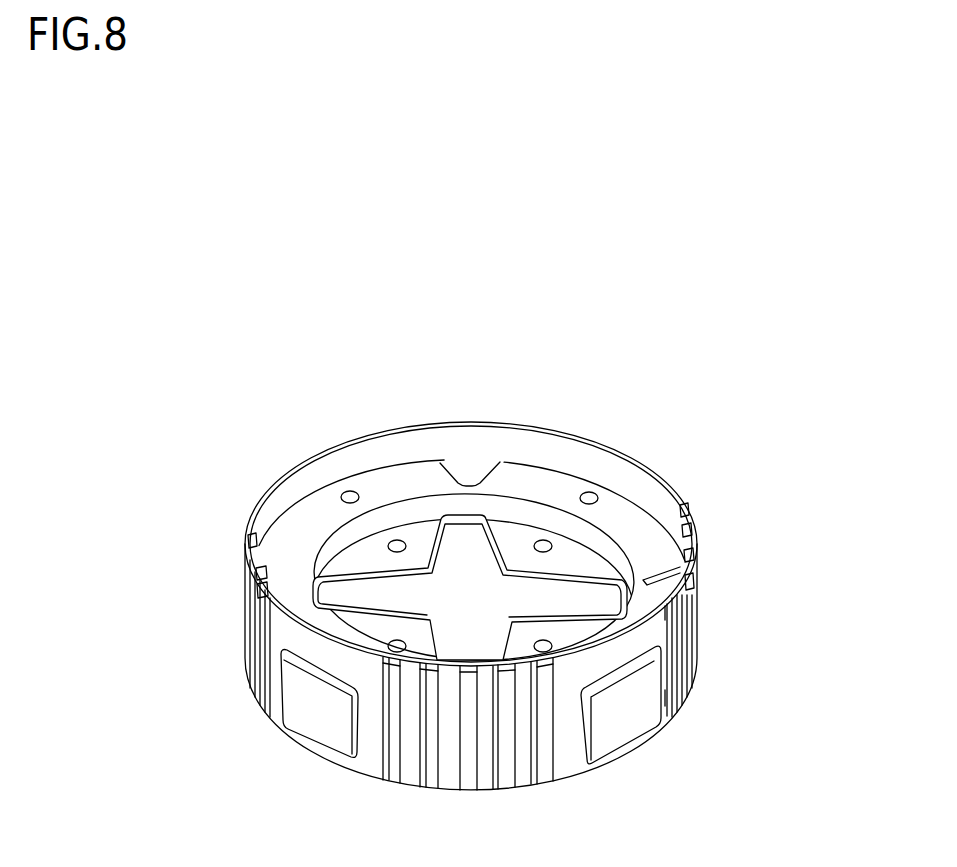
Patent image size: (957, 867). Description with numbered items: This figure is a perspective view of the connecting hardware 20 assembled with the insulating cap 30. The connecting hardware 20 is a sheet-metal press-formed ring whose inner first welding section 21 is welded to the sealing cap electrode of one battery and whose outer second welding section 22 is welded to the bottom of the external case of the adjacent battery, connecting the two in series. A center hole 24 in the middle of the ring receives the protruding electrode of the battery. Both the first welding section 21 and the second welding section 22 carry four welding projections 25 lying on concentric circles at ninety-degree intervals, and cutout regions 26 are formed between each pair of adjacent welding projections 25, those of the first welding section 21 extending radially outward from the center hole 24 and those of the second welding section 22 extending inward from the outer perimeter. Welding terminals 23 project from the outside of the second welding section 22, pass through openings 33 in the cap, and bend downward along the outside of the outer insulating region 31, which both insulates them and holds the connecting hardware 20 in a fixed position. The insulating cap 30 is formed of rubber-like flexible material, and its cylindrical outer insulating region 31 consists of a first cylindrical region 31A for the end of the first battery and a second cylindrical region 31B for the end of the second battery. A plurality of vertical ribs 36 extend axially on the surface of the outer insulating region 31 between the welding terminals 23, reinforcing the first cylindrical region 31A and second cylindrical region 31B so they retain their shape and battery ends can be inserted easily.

The connecting hardware 20 is at (650, 476).
The first welding section 21 is at (350, 557).
The second welding section 22 is at (393, 477).
The welding terminals 23 is at (317, 725).
The center hole 24 is at (431, 563).
The welding projections 25 is at (345, 493).
The cutout regions 26 is at (502, 517).
The insulating cap 30 is at (712, 572).
The outer insulating region 31 is at (837, 588).
The first cylindrical region 31A is at (665, 697).
The second cylindrical region 31B is at (665, 613).
The openings 33 is at (320, 672).
The vertical ribs 36 is at (258, 652).